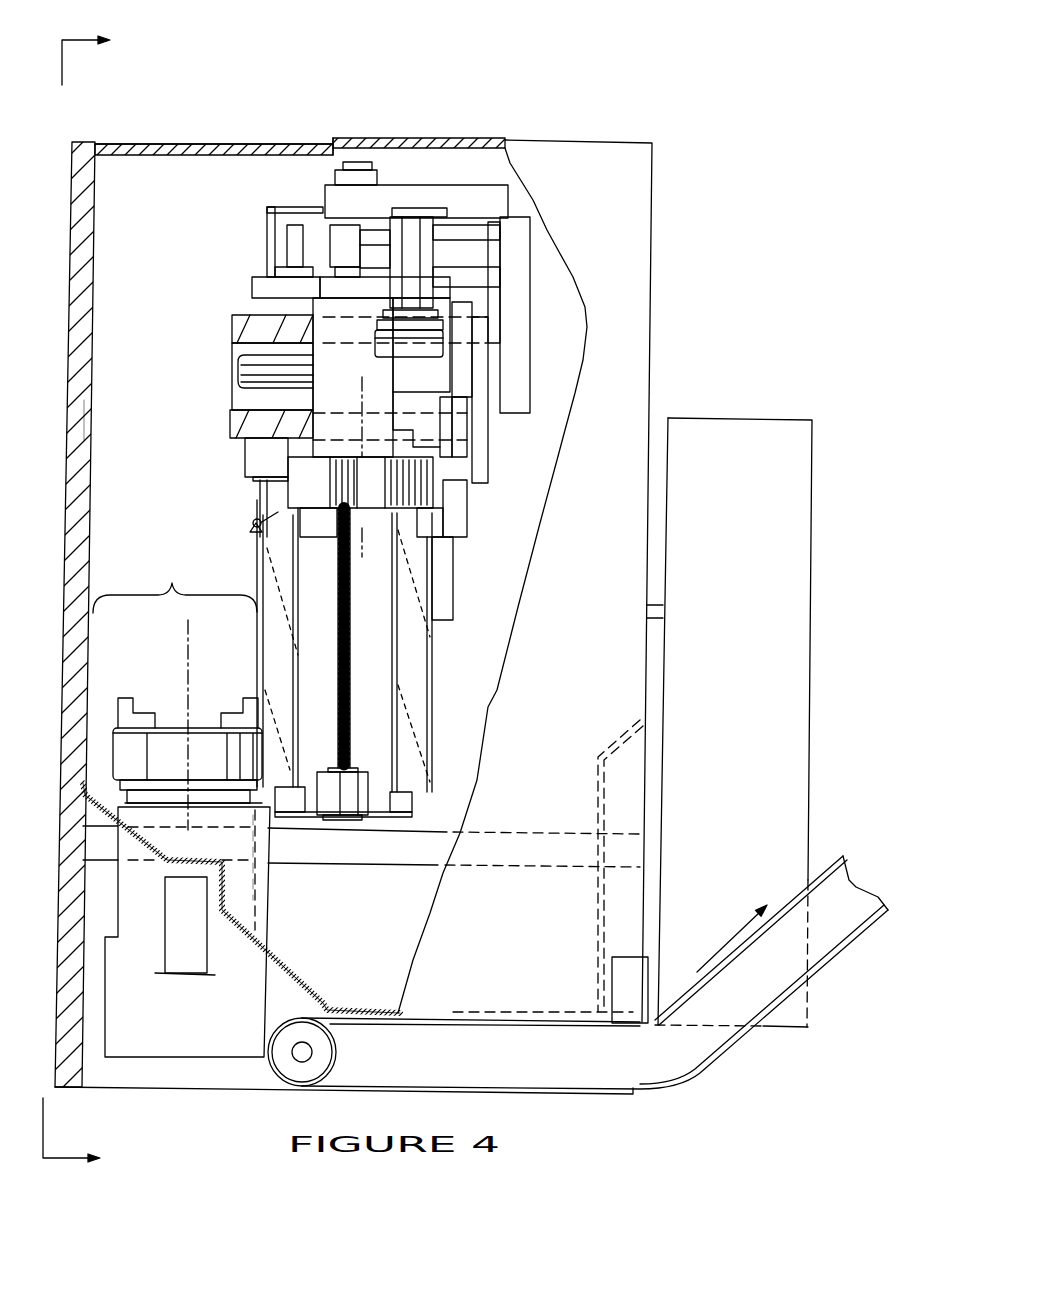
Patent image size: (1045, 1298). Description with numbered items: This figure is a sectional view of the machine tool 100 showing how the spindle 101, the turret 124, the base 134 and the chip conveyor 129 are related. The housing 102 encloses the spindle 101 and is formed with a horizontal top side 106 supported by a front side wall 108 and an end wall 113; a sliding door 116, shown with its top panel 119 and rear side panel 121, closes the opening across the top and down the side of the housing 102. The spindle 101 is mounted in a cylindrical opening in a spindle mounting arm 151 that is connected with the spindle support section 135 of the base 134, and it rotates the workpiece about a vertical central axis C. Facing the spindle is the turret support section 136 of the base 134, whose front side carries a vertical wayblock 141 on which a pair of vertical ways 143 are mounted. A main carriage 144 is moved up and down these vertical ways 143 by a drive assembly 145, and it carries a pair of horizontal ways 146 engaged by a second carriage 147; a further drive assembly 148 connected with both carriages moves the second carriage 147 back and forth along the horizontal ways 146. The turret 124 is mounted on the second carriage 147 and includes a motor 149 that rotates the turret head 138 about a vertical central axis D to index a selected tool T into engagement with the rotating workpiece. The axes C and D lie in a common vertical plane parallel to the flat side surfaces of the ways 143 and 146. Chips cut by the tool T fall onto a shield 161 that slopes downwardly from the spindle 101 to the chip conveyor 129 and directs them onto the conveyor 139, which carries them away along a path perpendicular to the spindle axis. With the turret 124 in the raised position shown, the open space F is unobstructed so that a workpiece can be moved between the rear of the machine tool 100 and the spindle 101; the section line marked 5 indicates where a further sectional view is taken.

The section line 5- 5 is at (90, 600).
The machine tool 100 is at (693, 118).
The spindle 101 is at (125, 757).
The housing 102 is at (662, 268).
The top side 106 is at (428, 138).
The front side wall 108 is at (618, 357).
The end wall 113 is at (58, 545).
The sliding door 116 is at (241, 143).
The top panel 119 is at (175, 146).
The rear side panel 121 is at (107, 420).
The turret 124 is at (272, 460).
The chip conveyor 129 is at (680, 1053).
The base 134 is at (416, 884).
The spindle support section 135 is at (115, 812).
The turret support section 136 is at (302, 207).
The turret head 138 is at (410, 483).
The conveyor 139 is at (800, 895).
The wayblock 141 is at (382, 793).
The vertical ways 143 is at (283, 677).
The main carriage 144 is at (245, 398).
The drive assembly 145 is at (343, 680).
The horizontal ways 146 is at (255, 333).
The second carriage 147 is at (430, 405).
The drive assembly 148 is at (490, 257).
The motor 149 is at (413, 232).
The spindle mounting arm 151 is at (265, 237).
The shield 161 is at (288, 958).
The tool T is at (258, 515).
The open space F is at (175, 586).
The central axis C is at (185, 700).
The central axis D is at (360, 528).